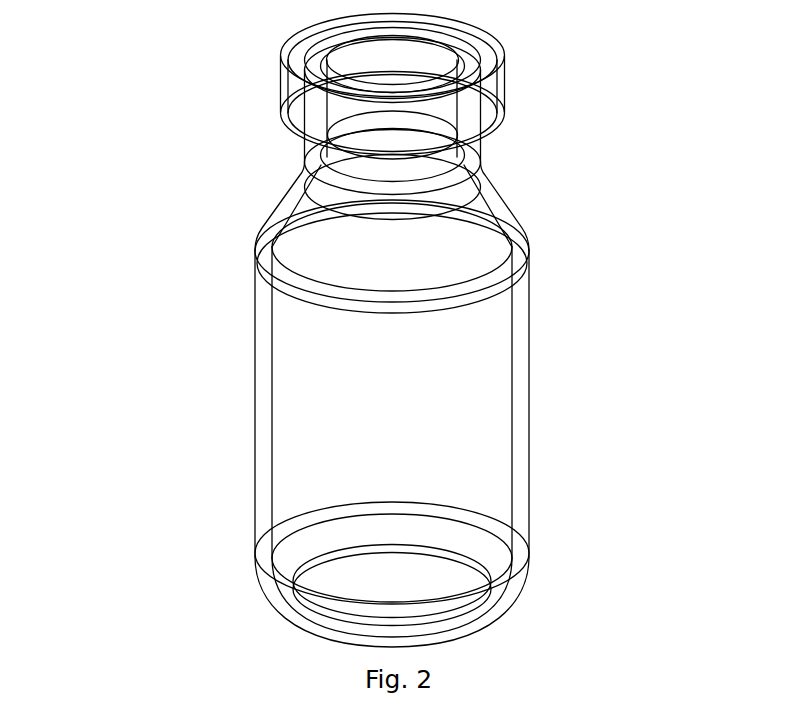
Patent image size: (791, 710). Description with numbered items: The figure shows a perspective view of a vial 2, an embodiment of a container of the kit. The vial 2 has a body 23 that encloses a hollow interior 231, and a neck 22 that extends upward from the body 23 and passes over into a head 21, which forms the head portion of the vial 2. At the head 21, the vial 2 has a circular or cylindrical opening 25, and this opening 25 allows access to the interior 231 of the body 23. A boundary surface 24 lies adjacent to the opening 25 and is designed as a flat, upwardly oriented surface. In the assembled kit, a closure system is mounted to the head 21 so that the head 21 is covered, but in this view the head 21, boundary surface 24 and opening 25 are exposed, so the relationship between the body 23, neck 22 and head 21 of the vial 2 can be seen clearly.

The vial 2 is at (222, 405).
The head 21 is at (497, 97).
The neck 22 is at (303, 150).
The body 23 is at (523, 470).
The hollow interior 231 is at (410, 453).
The boundary surface 24 is at (308, 54).
The opening 25 is at (418, 48).